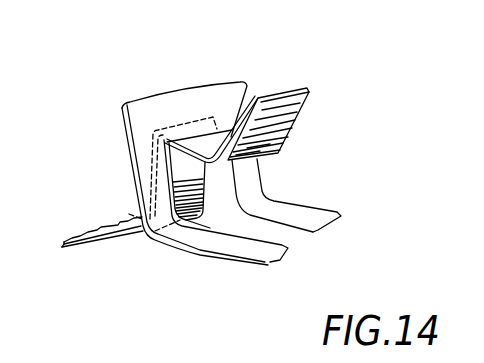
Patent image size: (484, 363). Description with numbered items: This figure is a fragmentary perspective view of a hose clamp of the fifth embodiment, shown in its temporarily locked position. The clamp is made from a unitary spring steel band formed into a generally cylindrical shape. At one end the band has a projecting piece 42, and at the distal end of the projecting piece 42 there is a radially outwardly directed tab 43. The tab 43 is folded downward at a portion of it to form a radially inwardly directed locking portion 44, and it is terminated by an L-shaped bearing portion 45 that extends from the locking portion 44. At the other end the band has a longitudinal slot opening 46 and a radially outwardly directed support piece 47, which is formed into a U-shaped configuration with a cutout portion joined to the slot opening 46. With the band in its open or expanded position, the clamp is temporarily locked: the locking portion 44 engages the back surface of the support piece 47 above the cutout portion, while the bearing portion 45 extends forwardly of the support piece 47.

The projecting piece 42 is at (128, 228).
The tab 43 is at (197, 182).
The locking portion 44 is at (182, 118).
The bearing portion 45 is at (283, 117).
The slot opening 46 is at (260, 226).
The support piece 47 is at (223, 82).